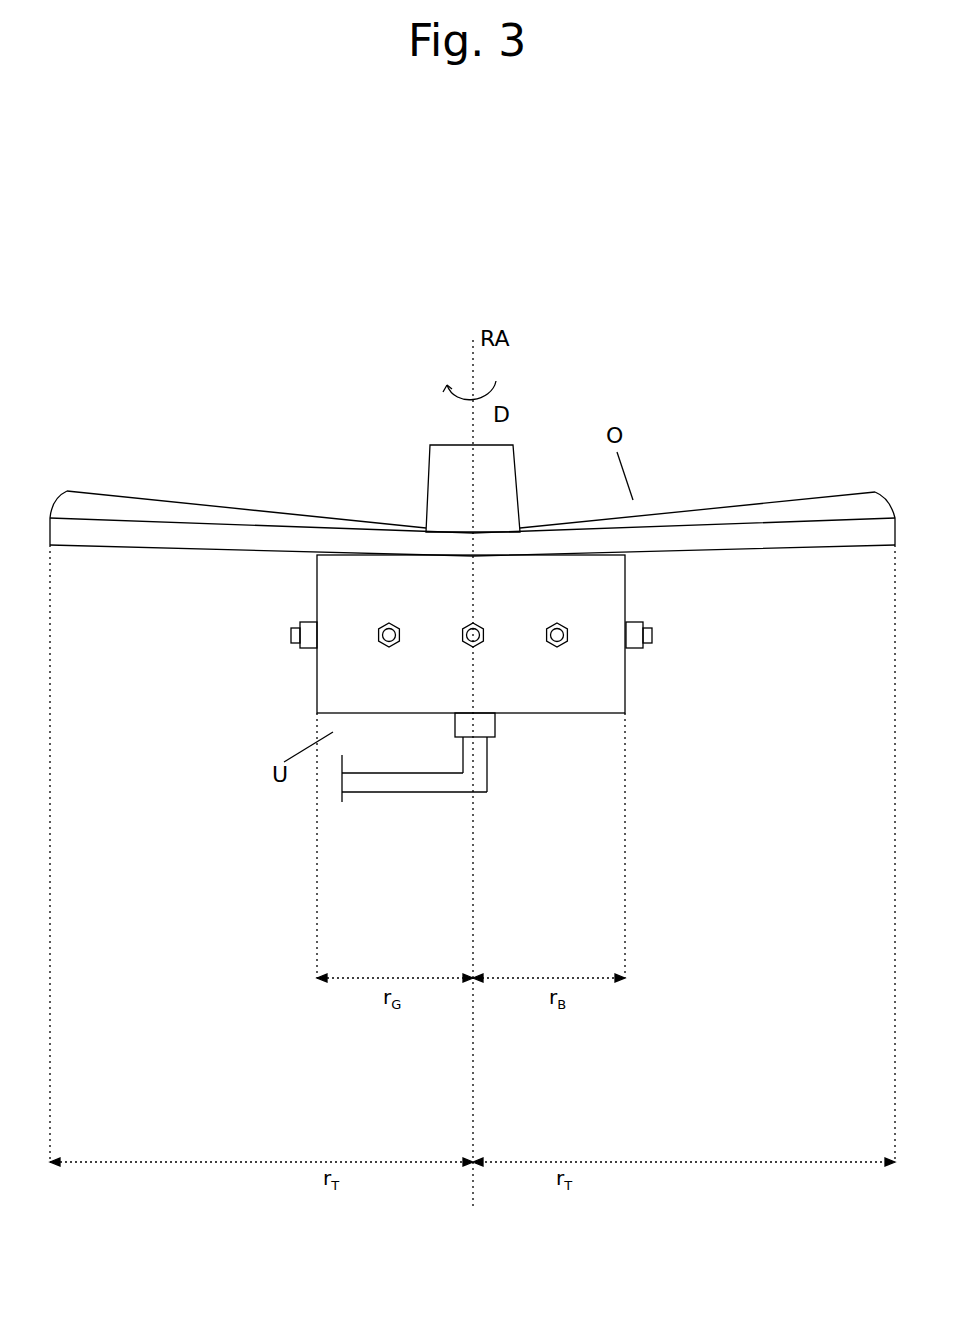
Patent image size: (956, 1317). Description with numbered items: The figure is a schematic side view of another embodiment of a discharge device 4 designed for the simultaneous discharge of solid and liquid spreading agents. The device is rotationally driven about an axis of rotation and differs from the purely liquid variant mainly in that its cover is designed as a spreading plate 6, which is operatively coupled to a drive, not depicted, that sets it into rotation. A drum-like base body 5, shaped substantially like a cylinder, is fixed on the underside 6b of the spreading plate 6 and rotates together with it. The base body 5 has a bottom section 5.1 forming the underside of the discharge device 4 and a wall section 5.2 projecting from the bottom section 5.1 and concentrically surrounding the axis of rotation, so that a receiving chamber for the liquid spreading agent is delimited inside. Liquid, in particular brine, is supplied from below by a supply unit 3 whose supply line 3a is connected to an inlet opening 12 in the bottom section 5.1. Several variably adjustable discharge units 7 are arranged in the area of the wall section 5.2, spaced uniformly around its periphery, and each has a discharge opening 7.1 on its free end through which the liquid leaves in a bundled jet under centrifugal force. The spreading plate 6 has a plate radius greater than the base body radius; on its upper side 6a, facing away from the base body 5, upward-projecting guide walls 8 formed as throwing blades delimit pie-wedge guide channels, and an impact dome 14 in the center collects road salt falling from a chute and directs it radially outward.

The supply unit 3 is at (453, 808).
The supply line 3a is at (372, 790).
The discharge device 4 is at (472, 516).
The base body 5 is at (443, 691).
The bottom section 5.1 is at (573, 725).
The wall section 5.2 is at (315, 678).
The spreading plate 6 is at (472, 555).
The upper side 6a is at (282, 505).
The underside 6b is at (140, 550).
The discharge unit 7 is at (452, 637).
The discharge opening 7.1 is at (292, 633).
The guide walls 8 is at (90, 503).
The inlet opening 12 is at (500, 717).
The impact dome 14 is at (432, 469).